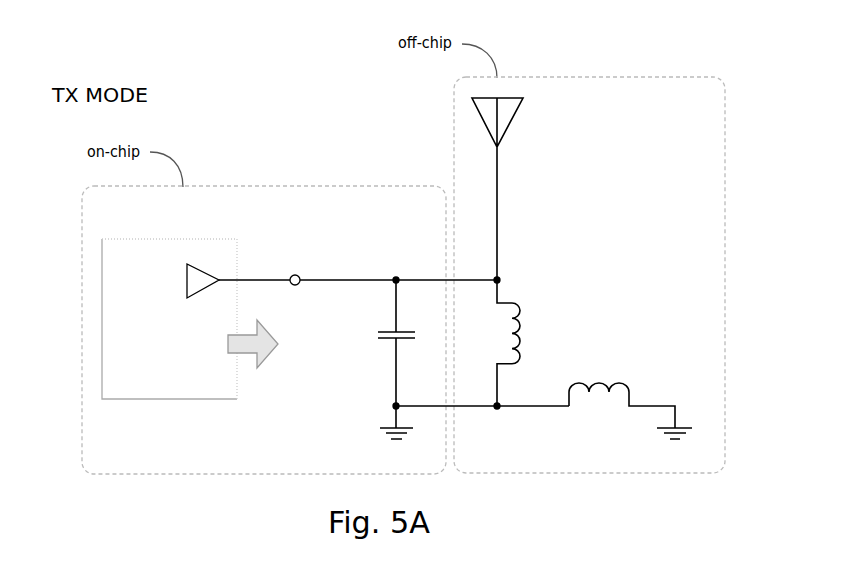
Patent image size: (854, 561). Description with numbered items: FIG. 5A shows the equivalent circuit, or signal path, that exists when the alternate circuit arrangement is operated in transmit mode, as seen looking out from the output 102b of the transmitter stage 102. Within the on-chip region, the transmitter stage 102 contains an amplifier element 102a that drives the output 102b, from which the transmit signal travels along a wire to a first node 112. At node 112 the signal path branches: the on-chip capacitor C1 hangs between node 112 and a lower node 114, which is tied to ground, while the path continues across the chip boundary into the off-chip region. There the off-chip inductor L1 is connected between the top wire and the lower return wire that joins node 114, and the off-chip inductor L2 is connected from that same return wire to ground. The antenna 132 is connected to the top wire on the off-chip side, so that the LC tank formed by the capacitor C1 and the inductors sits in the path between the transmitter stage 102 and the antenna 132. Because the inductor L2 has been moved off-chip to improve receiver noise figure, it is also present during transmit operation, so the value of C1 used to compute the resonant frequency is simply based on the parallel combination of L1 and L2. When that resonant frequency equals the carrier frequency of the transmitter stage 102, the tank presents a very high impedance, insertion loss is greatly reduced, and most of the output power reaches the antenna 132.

The transmitter stage 102 is at (169, 399).
The transmit amplifier 102a is at (203, 292).
The output 102b is at (295, 274).
The first terminal node 112 is at (396, 278).
The second terminal node 114 is at (394, 406).
The antenna 132 is at (512, 125).
The on-chip capacitor C1 is at (410, 343).
The off-chip inductor L1 is at (524, 343).
The off-chip inductor L2 is at (630, 398).